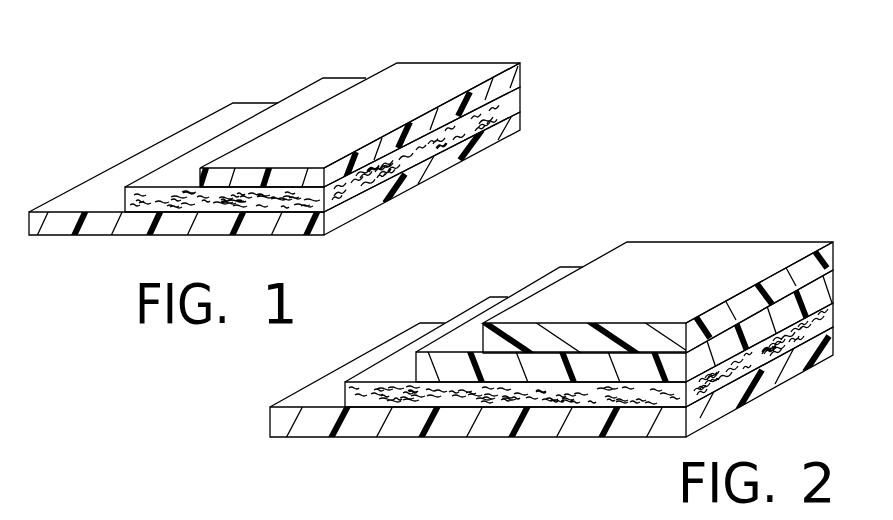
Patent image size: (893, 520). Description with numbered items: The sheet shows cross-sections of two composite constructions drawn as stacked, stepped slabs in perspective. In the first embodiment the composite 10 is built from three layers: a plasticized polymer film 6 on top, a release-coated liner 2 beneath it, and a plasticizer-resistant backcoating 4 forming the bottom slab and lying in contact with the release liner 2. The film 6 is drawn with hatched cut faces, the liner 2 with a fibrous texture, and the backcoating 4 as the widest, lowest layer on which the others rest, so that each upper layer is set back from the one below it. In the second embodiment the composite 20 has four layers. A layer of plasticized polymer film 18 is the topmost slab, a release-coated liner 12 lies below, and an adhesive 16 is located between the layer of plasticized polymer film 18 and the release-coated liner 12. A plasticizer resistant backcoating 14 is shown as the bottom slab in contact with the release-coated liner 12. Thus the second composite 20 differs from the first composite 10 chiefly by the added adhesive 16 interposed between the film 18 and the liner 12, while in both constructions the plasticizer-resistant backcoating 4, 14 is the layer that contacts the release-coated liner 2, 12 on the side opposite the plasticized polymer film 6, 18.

In FIG. 1, the composite 10 is at (447, 68).
In FIG. 1, the release-coated liner 2 is at (515, 96).
In FIG. 1, the plasticizer-resistant backcoating 4 is at (489, 137).
In FIG. 1, the plasticized polymer film 6 is at (499, 83).
In FIG. 2, the composite 20 is at (763, 252).
In FIG. 2, the release-coated liner 12 is at (827, 316).
In FIG. 2, the plasticizer resistant backcoating 14 is at (798, 367).
In FIG. 2, the adhesive 16 is at (820, 290).
In FIG. 2, the plasticized polymer film 18 is at (827, 257).